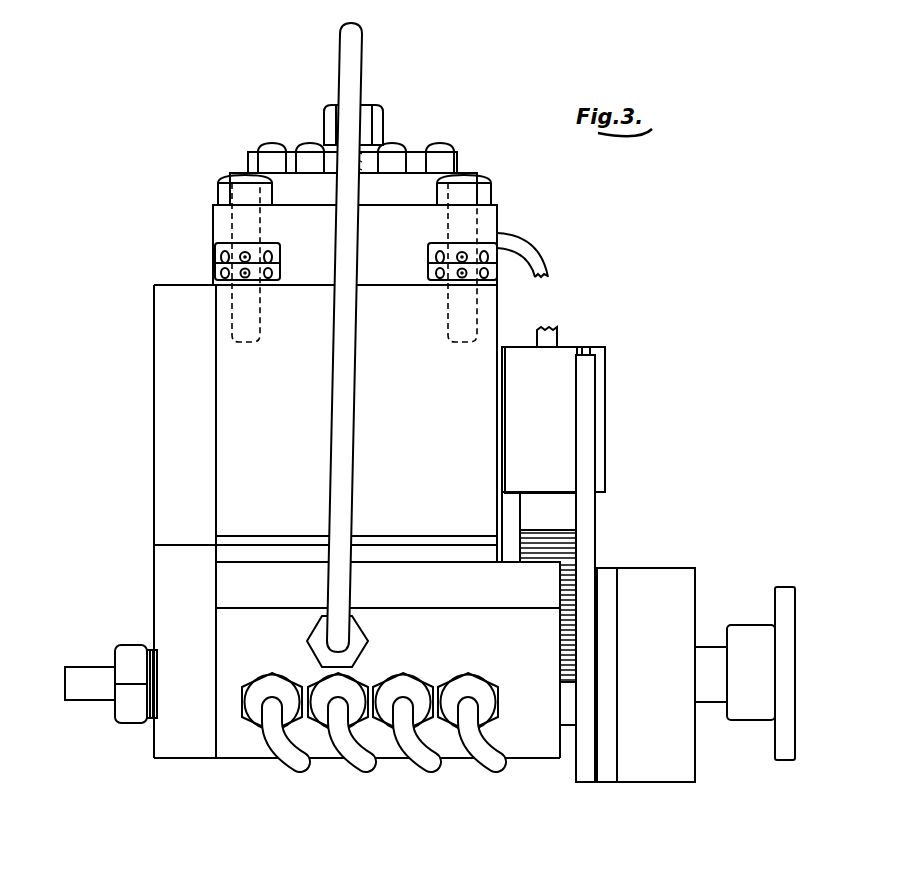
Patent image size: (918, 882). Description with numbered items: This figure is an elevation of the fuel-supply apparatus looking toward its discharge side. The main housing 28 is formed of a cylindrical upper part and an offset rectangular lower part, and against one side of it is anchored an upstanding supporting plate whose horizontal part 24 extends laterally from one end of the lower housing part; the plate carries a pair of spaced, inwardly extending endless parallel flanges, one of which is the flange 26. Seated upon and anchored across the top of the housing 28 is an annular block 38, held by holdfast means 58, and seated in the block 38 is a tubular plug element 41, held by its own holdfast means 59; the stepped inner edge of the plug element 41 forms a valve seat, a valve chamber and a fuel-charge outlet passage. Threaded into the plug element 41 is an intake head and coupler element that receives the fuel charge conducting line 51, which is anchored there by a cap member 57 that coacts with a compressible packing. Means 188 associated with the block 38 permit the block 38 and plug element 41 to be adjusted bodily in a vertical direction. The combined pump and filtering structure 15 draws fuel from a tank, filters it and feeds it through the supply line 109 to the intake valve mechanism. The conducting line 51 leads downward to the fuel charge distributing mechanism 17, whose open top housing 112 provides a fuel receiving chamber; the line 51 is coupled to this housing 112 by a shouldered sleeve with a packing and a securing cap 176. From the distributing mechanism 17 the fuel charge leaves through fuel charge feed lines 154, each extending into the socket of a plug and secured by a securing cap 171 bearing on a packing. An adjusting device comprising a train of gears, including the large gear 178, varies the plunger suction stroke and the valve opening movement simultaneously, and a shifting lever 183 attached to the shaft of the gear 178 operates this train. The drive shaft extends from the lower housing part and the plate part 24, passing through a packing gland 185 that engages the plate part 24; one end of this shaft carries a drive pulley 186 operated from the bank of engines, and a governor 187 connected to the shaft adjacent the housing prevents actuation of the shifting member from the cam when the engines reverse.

The combined pump and filtering structure 15 is at (610, 411).
The fuel charge distributing mechanism 17 is at (408, 578).
The horizontal part 24 is at (182, 573).
The flange 26 is at (185, 418).
The housing 28 is at (457, 361).
The annular block 38 is at (486, 218).
The tubular plug element 41 is at (404, 188).
The fuel charge conducting line 51 is at (343, 368).
The cap member 57 is at (332, 122).
The holdfast means 58 is at (489, 190).
The holdfast means 59 is at (464, 162).
The supply line 109 is at (528, 252).
The open top housing 112 is at (254, 745).
The fuel charge feed line 154 is at (362, 757).
The securing cap 171 is at (455, 691).
The securing cap 176 is at (312, 636).
The gear 178 is at (562, 551).
The shifting lever 183 is at (584, 507).
The packing gland 185 is at (134, 700).
The drive pulley 186 is at (752, 640).
The governor 187 is at (667, 763).
The means for vertically adjusting 188 is at (212, 257).